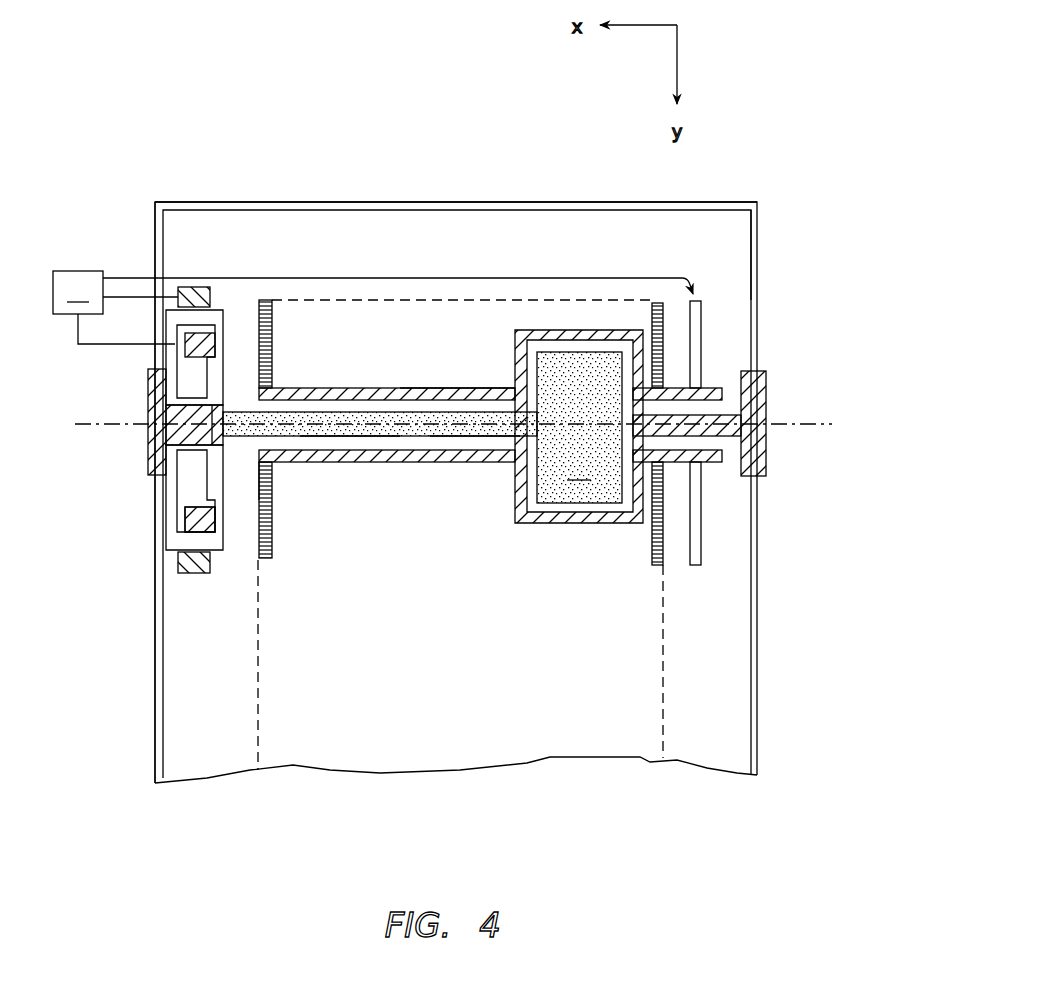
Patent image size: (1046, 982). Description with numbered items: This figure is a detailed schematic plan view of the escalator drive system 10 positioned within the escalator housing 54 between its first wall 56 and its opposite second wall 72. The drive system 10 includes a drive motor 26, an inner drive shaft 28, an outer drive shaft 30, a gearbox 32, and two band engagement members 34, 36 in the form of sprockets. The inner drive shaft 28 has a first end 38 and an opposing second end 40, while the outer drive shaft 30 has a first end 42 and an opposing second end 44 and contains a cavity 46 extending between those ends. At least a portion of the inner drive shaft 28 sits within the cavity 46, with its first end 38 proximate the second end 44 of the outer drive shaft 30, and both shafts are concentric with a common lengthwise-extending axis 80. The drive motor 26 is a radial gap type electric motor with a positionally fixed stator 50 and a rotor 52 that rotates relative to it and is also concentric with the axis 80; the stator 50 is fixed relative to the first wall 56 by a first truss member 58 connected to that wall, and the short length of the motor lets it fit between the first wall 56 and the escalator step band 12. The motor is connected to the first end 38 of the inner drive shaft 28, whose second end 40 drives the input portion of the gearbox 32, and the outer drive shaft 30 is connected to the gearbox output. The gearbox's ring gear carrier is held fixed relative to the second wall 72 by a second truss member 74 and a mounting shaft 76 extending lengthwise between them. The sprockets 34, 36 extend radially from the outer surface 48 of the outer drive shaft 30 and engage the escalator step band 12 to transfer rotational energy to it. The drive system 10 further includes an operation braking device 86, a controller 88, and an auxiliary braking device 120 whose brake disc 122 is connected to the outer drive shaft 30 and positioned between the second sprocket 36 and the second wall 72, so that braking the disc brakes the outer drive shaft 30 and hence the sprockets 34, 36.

The drive system 10 is at (217, 231).
The escalator step band 12 is at (395, 298).
The drive motor 26 is at (231, 347).
The inner drive shaft 28 is at (348, 437).
The outer drive shaft 30 is at (393, 463).
The gearbox 32 is at (579, 426).
The band engagement member 34 is at (275, 313).
The band engagement member 36 is at (672, 313).
The first end 38 is at (238, 462).
The second end 40 is at (472, 442).
The first end 42 is at (714, 368).
The second end 44 is at (288, 378).
The cavity 46 is at (534, 350).
The outer surface 48 is at (452, 387).
The stator 50 is at (177, 515).
The rotor 52 is at (190, 527).
The escalator housing 54 is at (468, 202).
The first wall 56 is at (155, 620).
The first truss member 58 is at (148, 392).
The second wall 72 is at (755, 256).
The second truss member 74 is at (766, 457).
The mounting shaft 76 is at (735, 437).
The lengthwise-extending axis 80 is at (818, 420).
The operation braking device 86 is at (192, 282).
The controller 88 is at (373, 307).
The auxiliary braking device 120 is at (701, 235).
The brake disc 122 is at (703, 313).